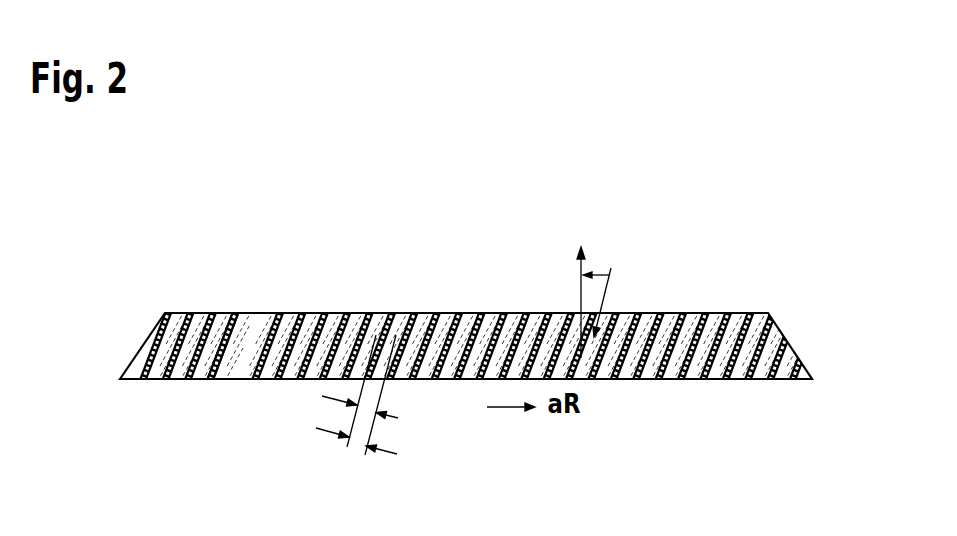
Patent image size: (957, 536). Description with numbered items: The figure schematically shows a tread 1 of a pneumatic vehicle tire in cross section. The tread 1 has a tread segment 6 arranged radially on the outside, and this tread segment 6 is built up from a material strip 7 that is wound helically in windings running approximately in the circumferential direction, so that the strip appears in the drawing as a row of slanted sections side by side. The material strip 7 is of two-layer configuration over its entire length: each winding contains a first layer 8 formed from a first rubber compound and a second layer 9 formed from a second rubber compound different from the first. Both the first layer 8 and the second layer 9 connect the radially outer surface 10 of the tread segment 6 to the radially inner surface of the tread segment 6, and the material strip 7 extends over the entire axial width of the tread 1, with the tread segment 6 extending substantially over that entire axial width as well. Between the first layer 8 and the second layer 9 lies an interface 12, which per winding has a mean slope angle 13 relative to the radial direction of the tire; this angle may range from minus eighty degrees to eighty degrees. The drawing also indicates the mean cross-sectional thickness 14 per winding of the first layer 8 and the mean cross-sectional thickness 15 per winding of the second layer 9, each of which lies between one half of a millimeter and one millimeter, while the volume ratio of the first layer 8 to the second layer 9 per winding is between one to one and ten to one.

The tread 1 is at (465, 285).
The tread segment 6 is at (472, 296).
The material strip 7 is at (404, 309).
The first layer 8 is at (427, 335).
The second layer 9 is at (371, 334).
The radially outer surface 10 is at (310, 313).
The interface 12 is at (611, 333).
The mean slope angle 13 is at (611, 270).
The mean cross-sectional thickness of the first layer 14 is at (322, 396).
The mean cross-sectional thickness of the second layer 15 is at (360, 453).